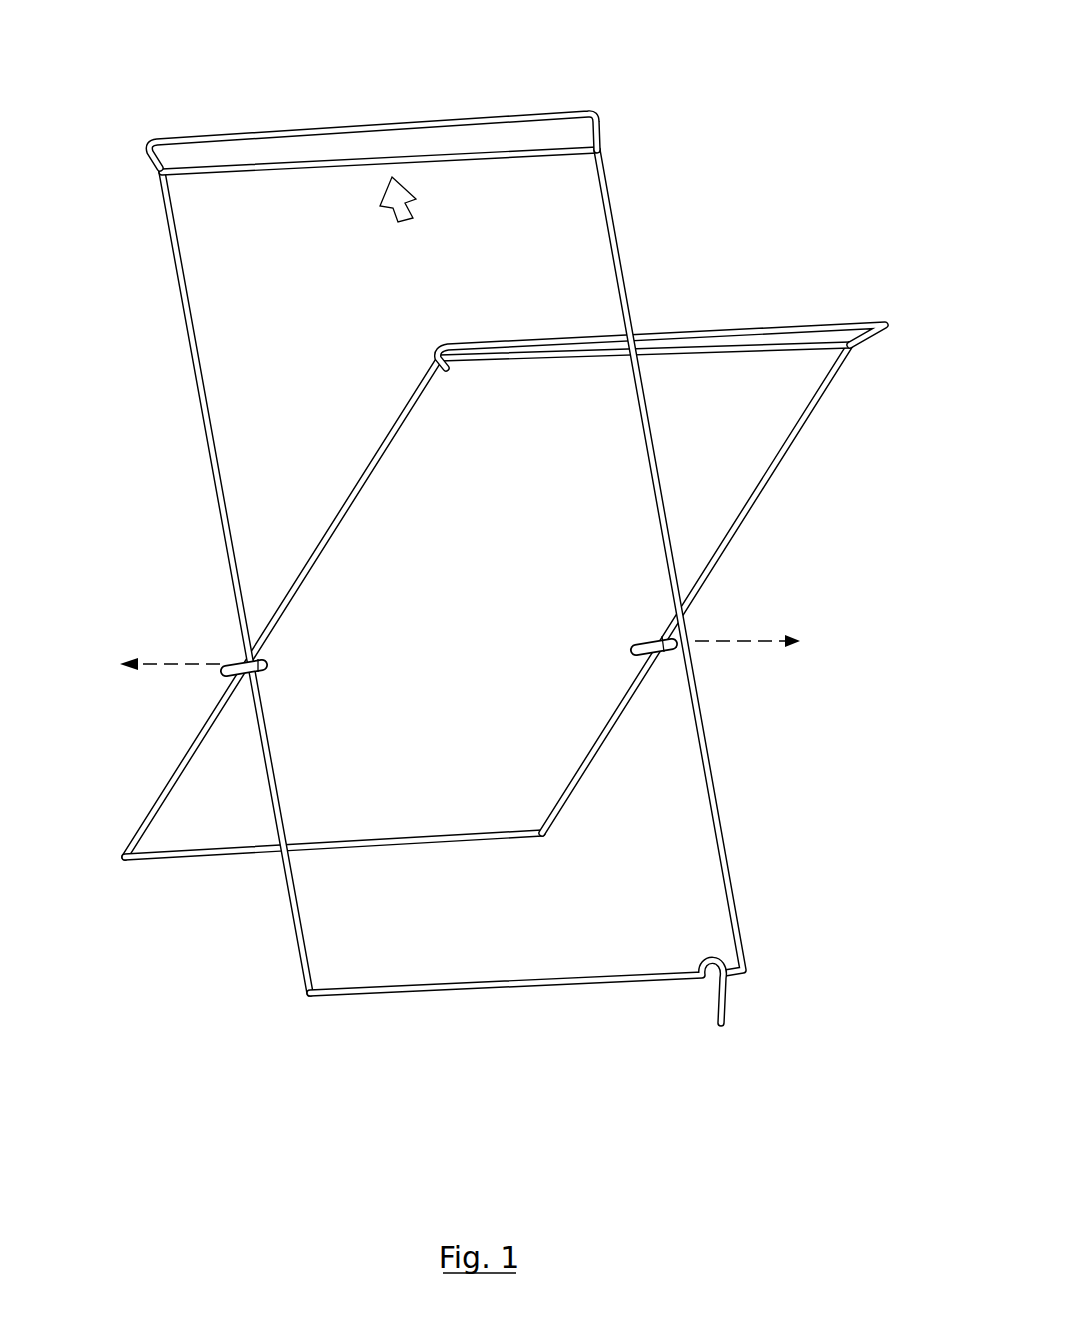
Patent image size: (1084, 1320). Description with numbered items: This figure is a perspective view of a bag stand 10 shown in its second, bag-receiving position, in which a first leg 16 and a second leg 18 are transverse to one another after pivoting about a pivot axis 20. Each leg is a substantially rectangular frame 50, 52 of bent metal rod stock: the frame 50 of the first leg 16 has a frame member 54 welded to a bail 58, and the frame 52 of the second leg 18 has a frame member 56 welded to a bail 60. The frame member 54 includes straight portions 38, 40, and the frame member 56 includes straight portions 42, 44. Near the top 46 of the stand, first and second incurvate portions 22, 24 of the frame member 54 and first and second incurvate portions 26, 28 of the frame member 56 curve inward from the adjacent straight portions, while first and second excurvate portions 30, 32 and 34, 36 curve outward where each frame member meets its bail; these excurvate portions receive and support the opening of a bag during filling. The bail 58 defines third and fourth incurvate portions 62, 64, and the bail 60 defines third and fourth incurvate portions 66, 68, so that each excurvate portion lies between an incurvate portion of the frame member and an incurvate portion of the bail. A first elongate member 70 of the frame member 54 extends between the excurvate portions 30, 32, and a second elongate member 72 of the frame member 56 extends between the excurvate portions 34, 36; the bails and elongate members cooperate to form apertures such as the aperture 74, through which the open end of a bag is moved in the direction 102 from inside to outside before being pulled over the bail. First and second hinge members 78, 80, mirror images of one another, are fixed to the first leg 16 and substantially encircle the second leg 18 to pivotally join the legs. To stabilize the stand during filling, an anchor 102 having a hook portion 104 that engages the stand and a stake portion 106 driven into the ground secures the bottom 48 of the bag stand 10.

The bag stand 10 is at (818, 128).
The first leg 16 is at (460, 561).
The second leg 18 is at (525, 541).
The pivot axis 20 is at (765, 641).
The first incurvate portion 22 is at (180, 178).
The second incurvate portion 24 is at (605, 152).
The first incurvate portion 26 is at (444, 366).
The second incurvate portion 28 is at (842, 348).
The first excurvate portion 30 is at (156, 164).
The second excurvate portion 32 is at (598, 138).
The first excurvate portion 34 is at (434, 357).
The second excurvate portion 36 is at (670, 334).
The straight portion 38 is at (195, 300).
The straight portion 40 is at (620, 240).
The straight portion 42 is at (335, 530).
The straight portion 44 is at (775, 480).
The top 46 is at (220, 80).
The bottom 48 is at (376, 1042).
The substantially rectangular frame 50 is at (206, 998).
The substantially rectangular frame 52 is at (257, 1062).
The frame member 54 is at (272, 770).
The frame member 56 is at (725, 858).
The bail 58 is at (345, 128).
The bail 60 is at (760, 333).
The third incurvate portion 62 is at (150, 148).
The fourth incurvate portion 64 is at (590, 115).
The third incurvate portion 66 is at (440, 348).
The fourth incurvate portion 68 is at (888, 323).
The first elongate member 70 is at (295, 172).
The second elongate member 72 is at (556, 357).
The aperture 74 is at (270, 148).
The first hinge member 78 is at (198, 636).
The second hinge member 80 is at (602, 637).
The anchor 102 is at (420, 207).
The hook portion 104 is at (708, 958).
The stake portion 106 is at (724, 1005).